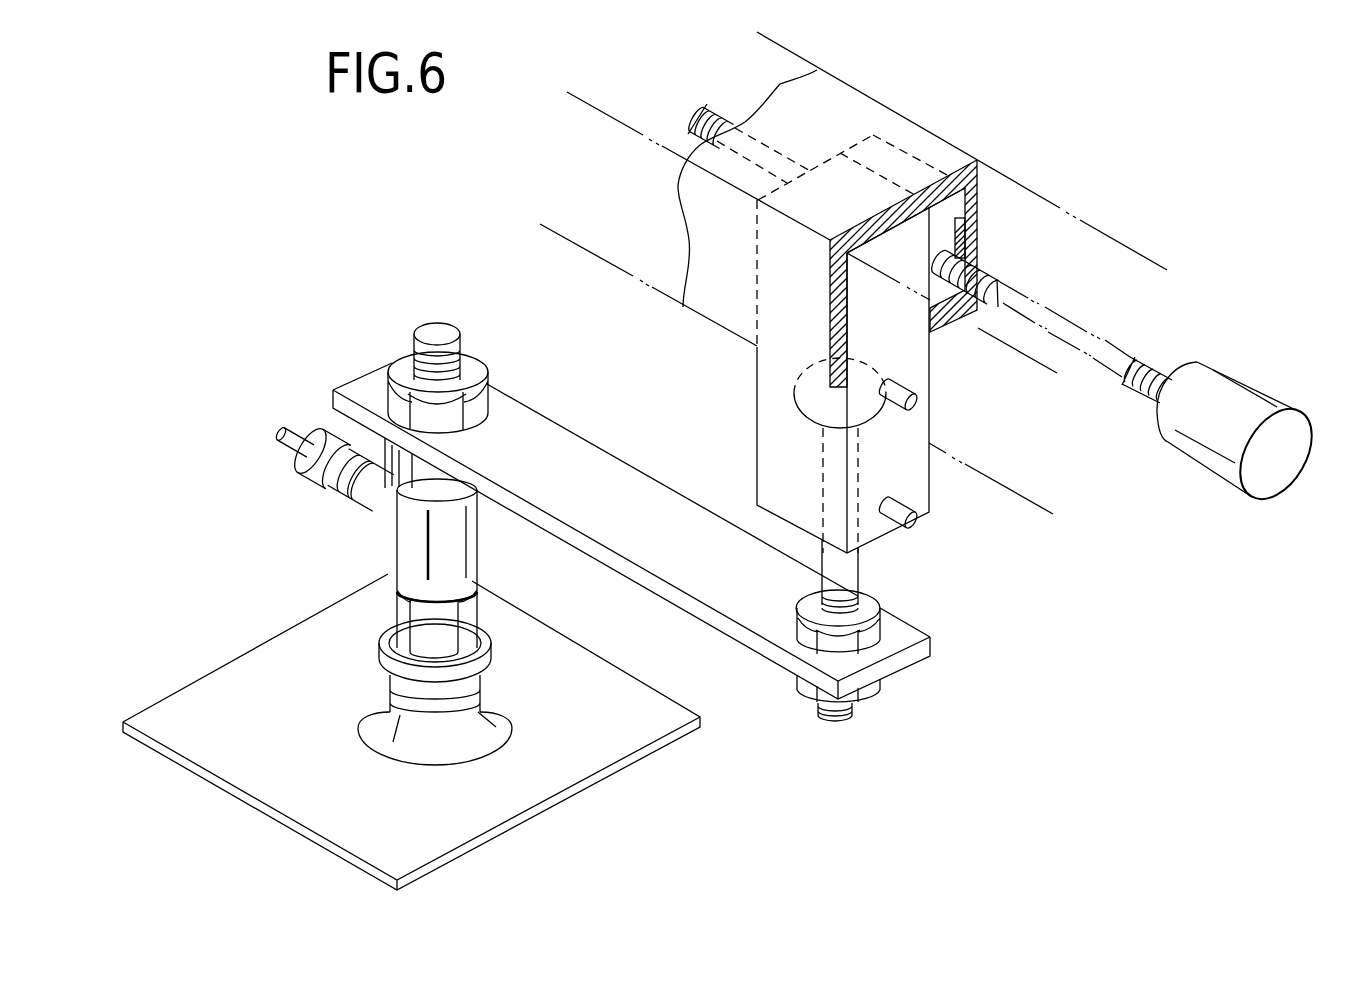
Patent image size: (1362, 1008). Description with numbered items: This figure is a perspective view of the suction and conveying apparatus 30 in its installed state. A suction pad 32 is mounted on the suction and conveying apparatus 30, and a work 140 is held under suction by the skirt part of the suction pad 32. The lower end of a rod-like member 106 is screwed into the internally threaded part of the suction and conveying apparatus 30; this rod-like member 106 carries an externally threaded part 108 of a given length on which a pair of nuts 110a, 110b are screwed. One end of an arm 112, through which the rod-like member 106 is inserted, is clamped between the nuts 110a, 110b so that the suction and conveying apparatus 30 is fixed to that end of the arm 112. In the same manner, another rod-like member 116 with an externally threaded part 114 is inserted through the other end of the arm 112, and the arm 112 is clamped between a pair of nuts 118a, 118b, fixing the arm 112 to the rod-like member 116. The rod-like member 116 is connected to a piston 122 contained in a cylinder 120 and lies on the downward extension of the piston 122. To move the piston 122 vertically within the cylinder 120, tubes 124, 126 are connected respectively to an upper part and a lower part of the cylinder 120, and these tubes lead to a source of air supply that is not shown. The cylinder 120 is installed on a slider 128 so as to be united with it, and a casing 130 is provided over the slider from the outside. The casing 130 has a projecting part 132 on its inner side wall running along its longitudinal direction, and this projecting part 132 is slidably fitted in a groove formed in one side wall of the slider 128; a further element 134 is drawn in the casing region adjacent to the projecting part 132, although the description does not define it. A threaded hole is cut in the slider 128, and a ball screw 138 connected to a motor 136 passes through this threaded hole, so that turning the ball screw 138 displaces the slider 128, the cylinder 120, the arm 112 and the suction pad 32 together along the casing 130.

The suction and conveying apparatus 30 is at (296, 493).
The suction pad 32 is at (496, 688).
The rod-like member 106 is at (430, 333).
The externally threaded part 108 is at (458, 363).
The nut 110a is at (485, 412).
The nut 110b is at (427, 487).
The arm 112 is at (767, 608).
The externally threaded part 114 is at (841, 717).
The rod-like member 116 is at (862, 578).
The nut 118a is at (870, 634).
The nut 118b is at (868, 692).
The cylinder 120 is at (752, 436).
The piston 122 is at (800, 399).
The tube 124 is at (917, 401).
The tube 126 is at (913, 522).
The slider 128 is at (892, 165).
The casing 130 is at (986, 183).
The projecting part 132 is at (980, 257).
The threaded nut 134 is at (980, 232).
The motor 136 is at (1227, 390).
The ball screw 138 is at (1030, 300).
The work 140 is at (447, 817).